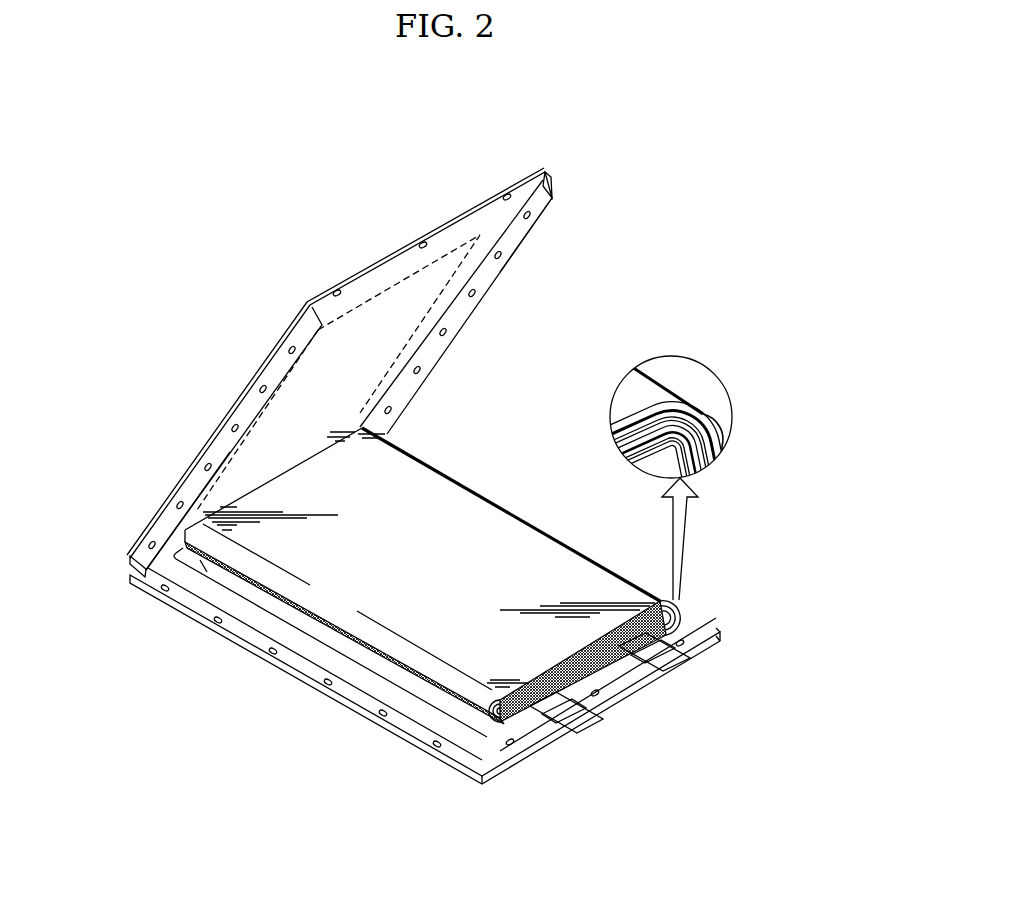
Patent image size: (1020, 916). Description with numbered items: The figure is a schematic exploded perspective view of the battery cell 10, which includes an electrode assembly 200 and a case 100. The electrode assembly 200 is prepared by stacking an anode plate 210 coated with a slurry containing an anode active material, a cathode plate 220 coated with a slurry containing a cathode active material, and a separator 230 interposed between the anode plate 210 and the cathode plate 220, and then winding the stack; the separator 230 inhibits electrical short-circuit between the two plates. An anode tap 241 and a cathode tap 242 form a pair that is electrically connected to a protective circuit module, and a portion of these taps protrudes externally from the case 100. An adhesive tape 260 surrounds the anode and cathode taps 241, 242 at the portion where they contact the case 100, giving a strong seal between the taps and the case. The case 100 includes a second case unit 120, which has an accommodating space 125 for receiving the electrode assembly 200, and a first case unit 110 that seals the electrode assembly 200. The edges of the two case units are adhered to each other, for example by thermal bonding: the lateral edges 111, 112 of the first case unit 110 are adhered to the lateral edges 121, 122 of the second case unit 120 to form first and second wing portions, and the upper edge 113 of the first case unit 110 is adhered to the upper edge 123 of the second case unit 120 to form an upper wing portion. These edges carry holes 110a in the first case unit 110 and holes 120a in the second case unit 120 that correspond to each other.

The battery cell 10 is at (706, 123).
The case 100 is at (250, 348).
The first case unit 110 is at (248, 392).
The holes 110a is at (174, 505).
The lateral edge 111 is at (200, 478).
The lateral edge 112 is at (540, 203).
The upper edge 113 is at (450, 238).
The second case unit 120 is at (523, 753).
The holes 120a is at (217, 624).
The lateral edge 121 is at (360, 702).
The lateral edge 122 is at (722, 641).
The upper edge 123 is at (622, 681).
The accommodating space 125 is at (289, 618).
The electrode assembly 200 is at (506, 496).
The anode plate 210 is at (700, 414).
The cathode plate 220 is at (697, 457).
The separator 230 is at (705, 438).
The anode tap 241 is at (589, 718).
The cathode tap 242 is at (686, 666).
The adhesive tape 260 is at (553, 708).